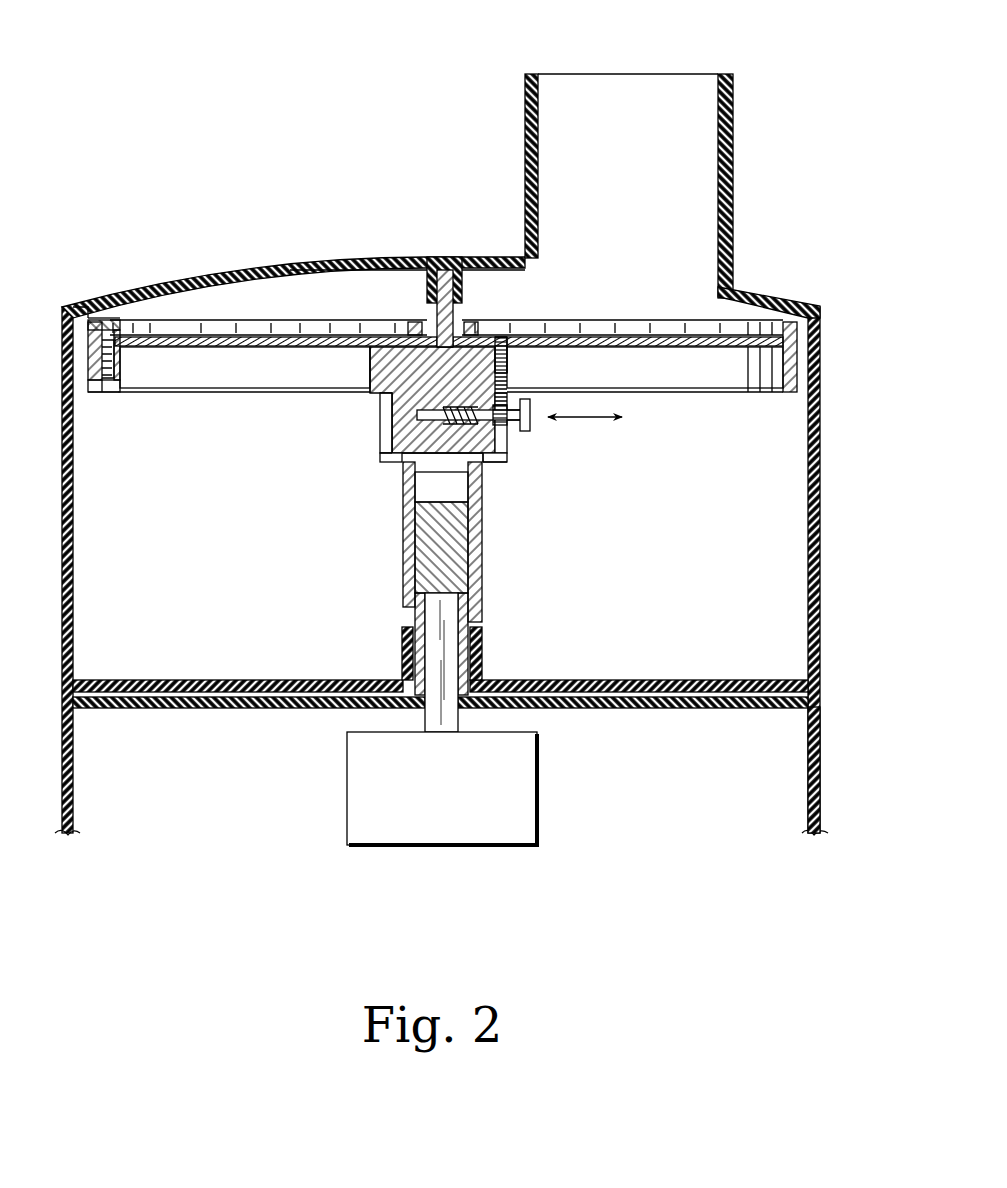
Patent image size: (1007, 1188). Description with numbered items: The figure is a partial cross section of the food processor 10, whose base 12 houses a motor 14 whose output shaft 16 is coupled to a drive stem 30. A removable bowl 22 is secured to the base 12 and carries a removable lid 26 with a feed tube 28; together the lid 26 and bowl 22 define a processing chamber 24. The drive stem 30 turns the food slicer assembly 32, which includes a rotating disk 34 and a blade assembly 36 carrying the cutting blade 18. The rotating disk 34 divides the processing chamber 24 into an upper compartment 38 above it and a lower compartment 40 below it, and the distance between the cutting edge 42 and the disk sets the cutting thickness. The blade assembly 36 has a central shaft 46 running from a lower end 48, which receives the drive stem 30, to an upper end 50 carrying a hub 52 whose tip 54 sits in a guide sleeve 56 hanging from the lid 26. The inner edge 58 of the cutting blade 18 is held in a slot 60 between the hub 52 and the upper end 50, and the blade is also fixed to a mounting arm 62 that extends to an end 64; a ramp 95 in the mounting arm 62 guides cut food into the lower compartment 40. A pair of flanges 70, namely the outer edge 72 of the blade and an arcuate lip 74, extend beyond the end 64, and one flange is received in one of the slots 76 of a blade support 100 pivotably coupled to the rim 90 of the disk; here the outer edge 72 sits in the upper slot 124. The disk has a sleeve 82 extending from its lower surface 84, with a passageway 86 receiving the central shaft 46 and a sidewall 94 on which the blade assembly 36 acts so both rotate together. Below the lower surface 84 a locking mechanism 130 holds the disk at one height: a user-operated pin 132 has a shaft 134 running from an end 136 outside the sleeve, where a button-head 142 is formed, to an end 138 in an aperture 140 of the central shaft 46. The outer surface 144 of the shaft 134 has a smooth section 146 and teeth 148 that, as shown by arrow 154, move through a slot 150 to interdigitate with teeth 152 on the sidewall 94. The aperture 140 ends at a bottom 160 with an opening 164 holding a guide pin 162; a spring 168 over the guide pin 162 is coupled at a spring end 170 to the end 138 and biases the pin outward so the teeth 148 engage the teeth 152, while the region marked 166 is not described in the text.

The food processor 10 is at (461, 430).
The base 12 is at (808, 778).
The motor 14 is at (535, 783).
The output shaft 16 is at (478, 642).
The cutting blade 18 is at (212, 340).
The removable bowl 22 is at (815, 545).
The processing chamber 24 is at (782, 640).
The removable lid 26 is at (200, 268).
The feed tube 28 is at (733, 147).
The drive stem 30 is at (470, 612).
The food slicer assembly 32 is at (516, 377).
The rotating disk 34 is at (638, 309).
The blade assembly 36 is at (421, 355).
The upper compartment 38 is at (742, 290).
The lower compartment 40 is at (790, 474).
The cutting edge 42 is at (160, 330).
The central shaft 46 is at (453, 542).
The lower end 48 is at (408, 592).
The upper end 50 is at (500, 343).
The hub 52 is at (458, 325).
The tip 54 is at (444, 268).
The guide sleeve 56 is at (427, 292).
The inner edge 58 is at (410, 332).
The slot 60 is at (422, 330).
The mounting arm 62 is at (268, 388).
The end 64 is at (118, 388).
The flanges 70 is at (103, 320).
The outer edge 72 is at (120, 320).
The lip 74 is at (108, 393).
The slots 76 is at (102, 362).
The sleeve 82 is at (386, 455).
The lower surface 84 is at (650, 358).
The passageway 86 is at (400, 465).
The rim 90 is at (100, 393).
The sidewall 94 is at (508, 360).
The ramp 95 is at (240, 407).
The blade support 100 is at (88, 340).
The upper slot 124 is at (85, 315).
The locking mechanism 130 is at (556, 436).
The user-operated pin 132 is at (532, 412).
The shaft 134 is at (500, 462).
The end 136 is at (542, 420).
The end 138 is at (496, 380).
The aperture 140 is at (452, 435).
The button-head 142 is at (532, 425).
The outer surface 144 is at (506, 432).
The smooth section 146 is at (535, 430).
The teeth 148 is at (506, 395).
The slot 150 is at (504, 350).
The teeth 152 is at (512, 398).
The arrow 154 is at (624, 417).
The bottom 160 is at (382, 400).
The guide pin 162 is at (386, 420).
The opening 164 is at (393, 440).
The hub right foot 166 is at (480, 445).
The spring 168 is at (440, 410).
The spring end 170 is at (433, 388).